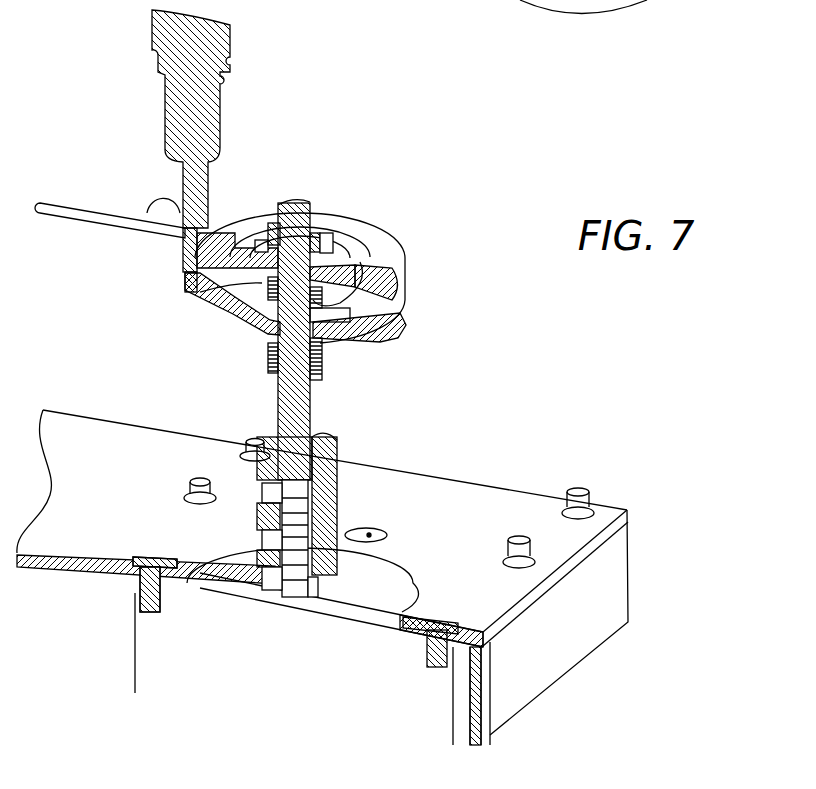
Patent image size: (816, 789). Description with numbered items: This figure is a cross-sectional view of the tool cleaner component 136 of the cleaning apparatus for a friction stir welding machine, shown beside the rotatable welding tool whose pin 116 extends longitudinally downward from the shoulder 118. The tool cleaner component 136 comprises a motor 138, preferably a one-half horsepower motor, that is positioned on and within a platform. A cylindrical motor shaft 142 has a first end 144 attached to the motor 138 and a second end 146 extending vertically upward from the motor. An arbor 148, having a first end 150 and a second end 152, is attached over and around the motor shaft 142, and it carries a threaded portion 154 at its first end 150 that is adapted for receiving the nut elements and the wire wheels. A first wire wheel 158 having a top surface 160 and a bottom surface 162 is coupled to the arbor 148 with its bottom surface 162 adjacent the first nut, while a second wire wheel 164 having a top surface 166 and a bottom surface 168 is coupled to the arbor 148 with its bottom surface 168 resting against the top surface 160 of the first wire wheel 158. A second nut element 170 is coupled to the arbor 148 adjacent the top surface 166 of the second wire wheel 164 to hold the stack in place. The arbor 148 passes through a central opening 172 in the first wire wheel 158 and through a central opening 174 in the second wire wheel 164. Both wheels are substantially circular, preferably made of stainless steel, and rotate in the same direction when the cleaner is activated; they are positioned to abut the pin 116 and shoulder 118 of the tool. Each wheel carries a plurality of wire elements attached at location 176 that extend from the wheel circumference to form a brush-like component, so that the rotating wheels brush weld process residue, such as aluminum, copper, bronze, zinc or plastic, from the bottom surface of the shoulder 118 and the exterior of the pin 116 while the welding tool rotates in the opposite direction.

The pin 116 is at (178, 250).
The shoulder 118 is at (210, 197).
The tool cleaner component 136 is at (540, 373).
The motor 138 is at (397, 590).
The motor shaft 142 is at (367, 535).
The first end 144 is at (296, 550).
The second end 146 is at (300, 483).
The arbor 148 is at (295, 306).
The first end 150 is at (288, 197).
The second end 152 is at (310, 553).
The threaded portion 154 is at (313, 212).
The first wire wheel 158 is at (402, 263).
The top surface 160 is at (383, 243).
The bottom surface 162 is at (392, 320).
The second wire wheel 164 is at (413, 302).
The top surface 166 is at (190, 300).
The bottom surface 168 is at (222, 327).
The second nut element 170 is at (321, 369).
The central opening 172 is at (356, 248).
The central opening 174 is at (318, 341).
The location 176 is at (205, 232).